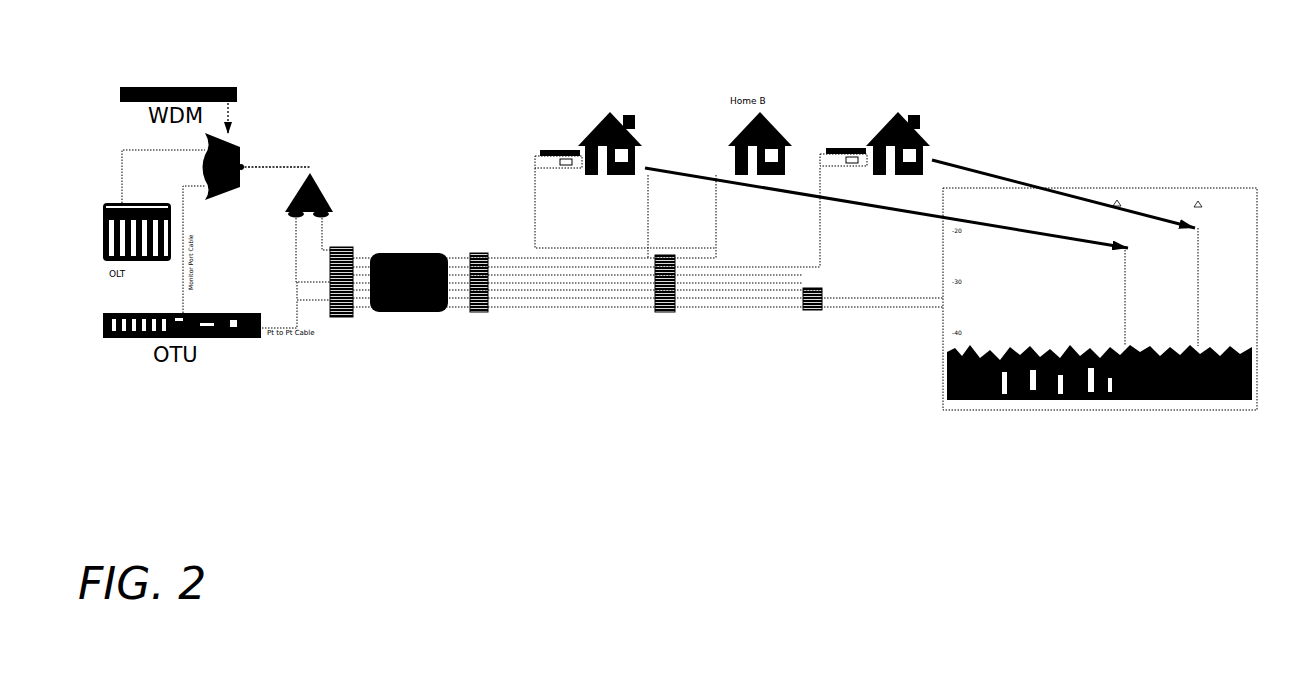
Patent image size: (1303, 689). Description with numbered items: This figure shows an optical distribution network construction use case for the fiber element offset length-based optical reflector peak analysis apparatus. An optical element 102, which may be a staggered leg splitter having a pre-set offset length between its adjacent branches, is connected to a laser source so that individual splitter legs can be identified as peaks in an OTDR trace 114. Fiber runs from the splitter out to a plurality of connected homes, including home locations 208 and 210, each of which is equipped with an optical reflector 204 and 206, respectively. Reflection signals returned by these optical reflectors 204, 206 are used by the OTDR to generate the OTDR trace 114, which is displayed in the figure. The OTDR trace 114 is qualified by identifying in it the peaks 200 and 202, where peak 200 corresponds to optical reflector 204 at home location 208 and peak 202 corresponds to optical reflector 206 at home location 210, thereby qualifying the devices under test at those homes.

The optical element 102 is at (337, 188).
The OTDR trace 114 is at (908, 351).
The peak 200 is at (1124, 252).
The peak 202 is at (1203, 238).
The optical reflector 204 is at (552, 140).
The optical reflector 206 is at (848, 131).
The home location 208 is at (616, 86).
The home location 210 is at (888, 86).